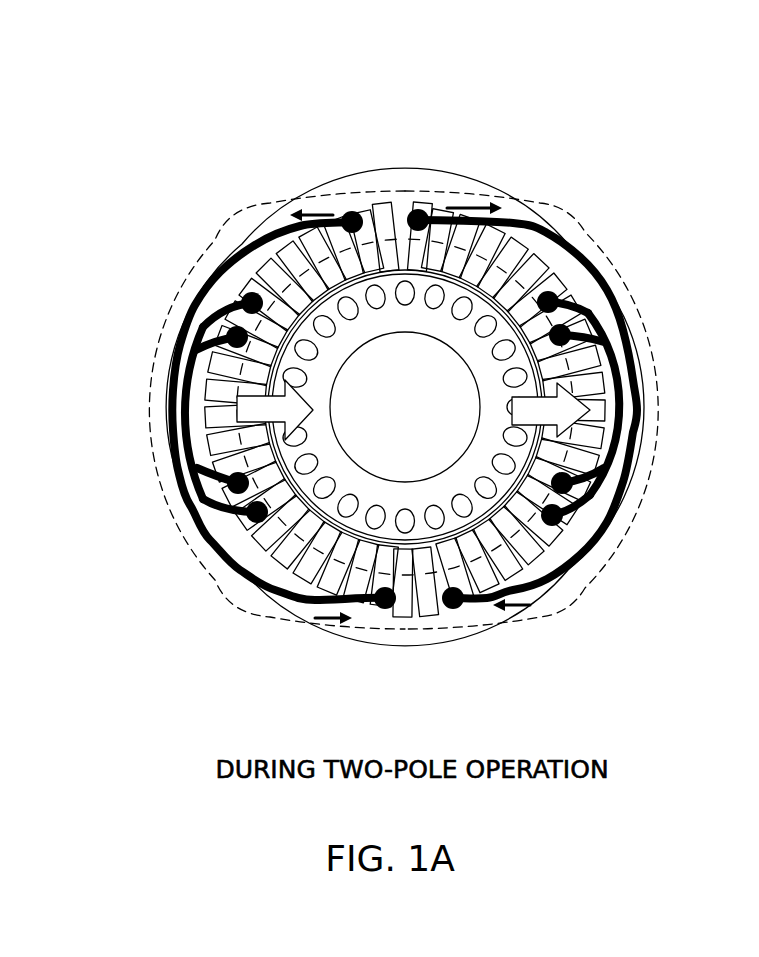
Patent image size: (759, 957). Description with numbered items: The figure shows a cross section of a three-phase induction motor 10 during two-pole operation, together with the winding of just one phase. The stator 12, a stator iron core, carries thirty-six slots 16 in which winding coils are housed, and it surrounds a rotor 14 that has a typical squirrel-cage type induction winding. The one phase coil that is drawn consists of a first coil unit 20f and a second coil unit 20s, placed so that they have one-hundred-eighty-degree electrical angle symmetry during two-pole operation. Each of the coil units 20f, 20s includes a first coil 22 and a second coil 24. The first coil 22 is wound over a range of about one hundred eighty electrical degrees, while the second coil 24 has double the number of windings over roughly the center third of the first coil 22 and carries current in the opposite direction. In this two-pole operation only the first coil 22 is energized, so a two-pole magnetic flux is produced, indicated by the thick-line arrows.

The three-phase induction motor 10 is at (412, 145).
The stator 12 is at (365, 637).
The rotor 14 is at (343, 350).
The slot 16 is at (430, 610).
The first coil unit 20f is at (307, 192).
The second coil unit 20s is at (520, 190).
The first coil 22 is at (232, 234).
The second coil 24 is at (620, 320).